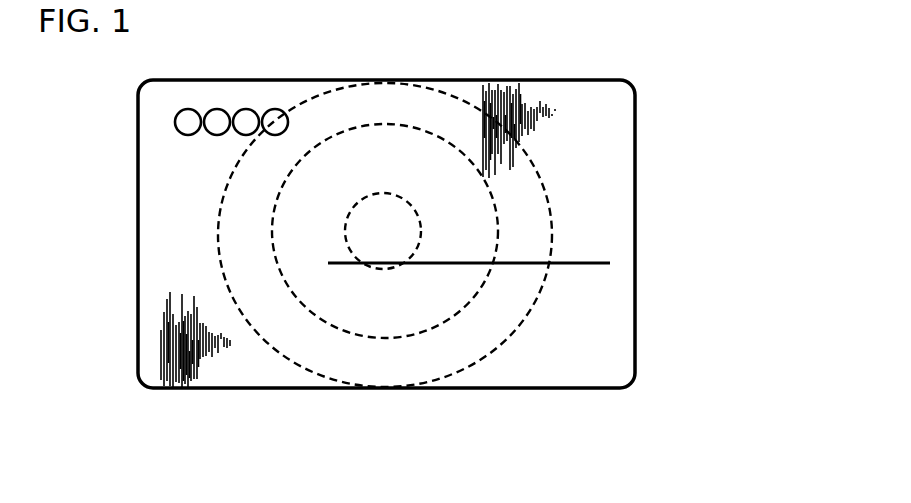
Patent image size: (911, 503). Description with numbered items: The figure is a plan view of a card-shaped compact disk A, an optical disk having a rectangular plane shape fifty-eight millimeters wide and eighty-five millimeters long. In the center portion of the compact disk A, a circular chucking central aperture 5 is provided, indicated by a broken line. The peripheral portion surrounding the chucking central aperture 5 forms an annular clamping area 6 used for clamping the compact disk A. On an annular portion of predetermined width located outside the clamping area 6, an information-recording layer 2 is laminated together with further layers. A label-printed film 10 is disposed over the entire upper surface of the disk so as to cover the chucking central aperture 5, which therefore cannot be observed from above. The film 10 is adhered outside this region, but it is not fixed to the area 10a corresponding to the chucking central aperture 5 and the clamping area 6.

The film 10 is at (604, 130).
The area of the film corresponding to the chucking central aperture 10a is at (370, 206).
The chucking central aperture 5 is at (418, 205).
The annular clamping area 6 is at (297, 275).
The information-recording layer 2 is at (136, 237).
The card-shaped compact disk A is at (530, 58).